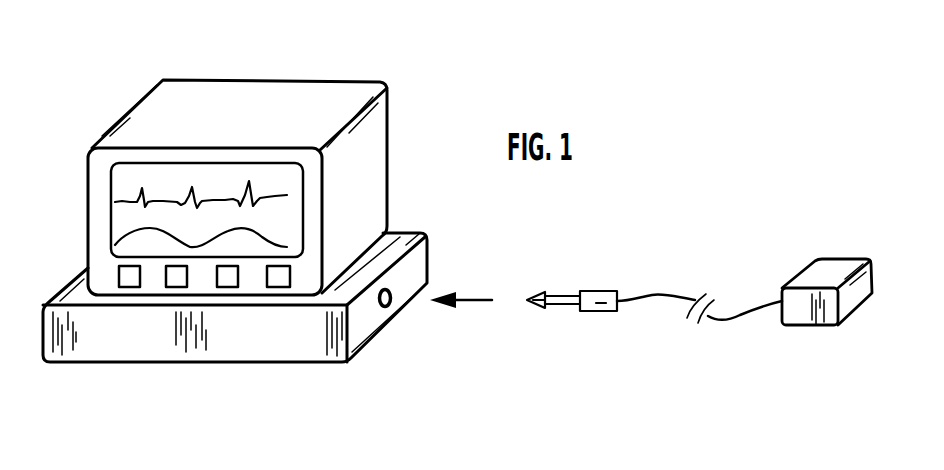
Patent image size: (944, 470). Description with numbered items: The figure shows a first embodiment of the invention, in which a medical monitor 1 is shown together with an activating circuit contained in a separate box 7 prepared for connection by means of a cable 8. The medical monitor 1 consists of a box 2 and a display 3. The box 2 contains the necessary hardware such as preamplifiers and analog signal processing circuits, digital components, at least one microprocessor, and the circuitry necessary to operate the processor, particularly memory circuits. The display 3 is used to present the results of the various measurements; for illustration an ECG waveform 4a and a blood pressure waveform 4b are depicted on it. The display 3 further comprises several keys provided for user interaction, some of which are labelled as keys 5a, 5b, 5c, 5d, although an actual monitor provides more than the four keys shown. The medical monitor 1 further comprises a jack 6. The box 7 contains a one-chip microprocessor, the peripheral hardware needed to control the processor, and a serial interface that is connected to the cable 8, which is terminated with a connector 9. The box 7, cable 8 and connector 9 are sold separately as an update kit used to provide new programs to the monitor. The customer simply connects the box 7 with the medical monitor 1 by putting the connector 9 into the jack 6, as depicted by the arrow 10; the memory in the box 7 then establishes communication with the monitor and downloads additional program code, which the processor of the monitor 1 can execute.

The medical monitor 1 is at (134, 74).
The box 2 is at (53, 357).
The display 3 is at (387, 122).
The ECG waveform 4a is at (115, 203).
The blood pressure waveform 4b is at (115, 245).
The key 5a is at (129, 287).
The key 5b is at (177, 287).
The key 5c is at (229, 287).
The key 5d is at (277, 287).
The jack 6 is at (388, 307).
The box 7 is at (839, 259).
The cable 8 is at (737, 322).
The connector 9 is at (597, 312).
The arrow 10 is at (486, 296).